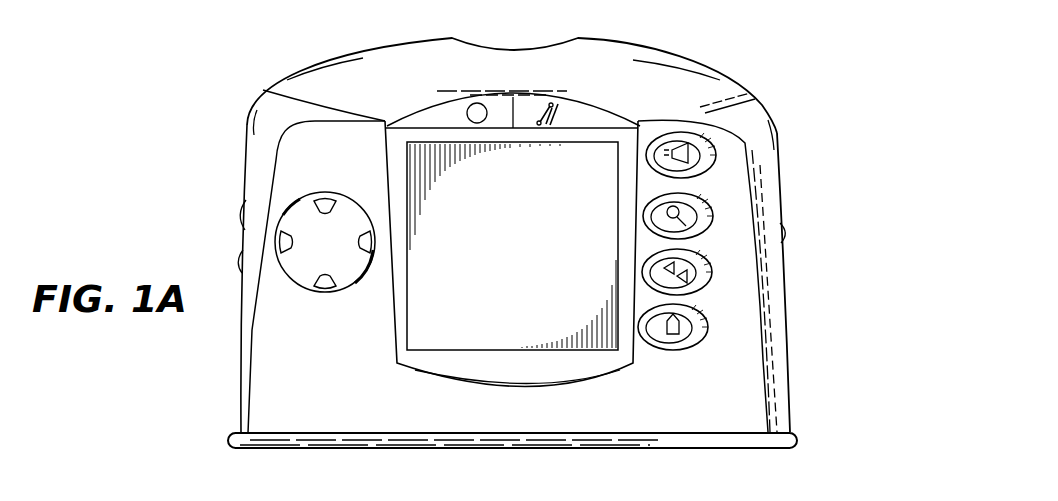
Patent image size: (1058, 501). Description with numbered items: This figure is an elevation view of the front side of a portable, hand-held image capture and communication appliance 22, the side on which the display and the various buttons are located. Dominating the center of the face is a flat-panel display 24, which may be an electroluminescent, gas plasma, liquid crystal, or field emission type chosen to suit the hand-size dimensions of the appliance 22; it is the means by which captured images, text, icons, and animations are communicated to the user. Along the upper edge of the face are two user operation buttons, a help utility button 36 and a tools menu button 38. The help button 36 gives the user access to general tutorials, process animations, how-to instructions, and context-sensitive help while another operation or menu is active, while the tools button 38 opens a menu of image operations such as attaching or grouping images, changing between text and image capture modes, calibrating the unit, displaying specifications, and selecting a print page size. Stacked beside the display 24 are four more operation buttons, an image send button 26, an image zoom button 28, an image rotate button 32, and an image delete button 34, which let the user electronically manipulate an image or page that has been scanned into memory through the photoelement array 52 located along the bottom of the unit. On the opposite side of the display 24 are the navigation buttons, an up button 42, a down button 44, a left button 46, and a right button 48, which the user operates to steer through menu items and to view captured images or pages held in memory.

The image capture and communication appliance 22 is at (704, 35).
The flat-panel display 24 is at (443, 203).
The image send button 26 is at (703, 157).
The image zoom button 28 is at (700, 217).
The image rotate button 32 is at (700, 273).
The image delete button 34 is at (693, 327).
The help utility button 36 is at (477, 103).
The tools menu button 38 is at (539, 108).
The up button 42 is at (317, 200).
The down button 44 is at (321, 288).
The left button 46 is at (285, 241).
The right button 48 is at (360, 250).
The photoelement array 52 is at (275, 438).